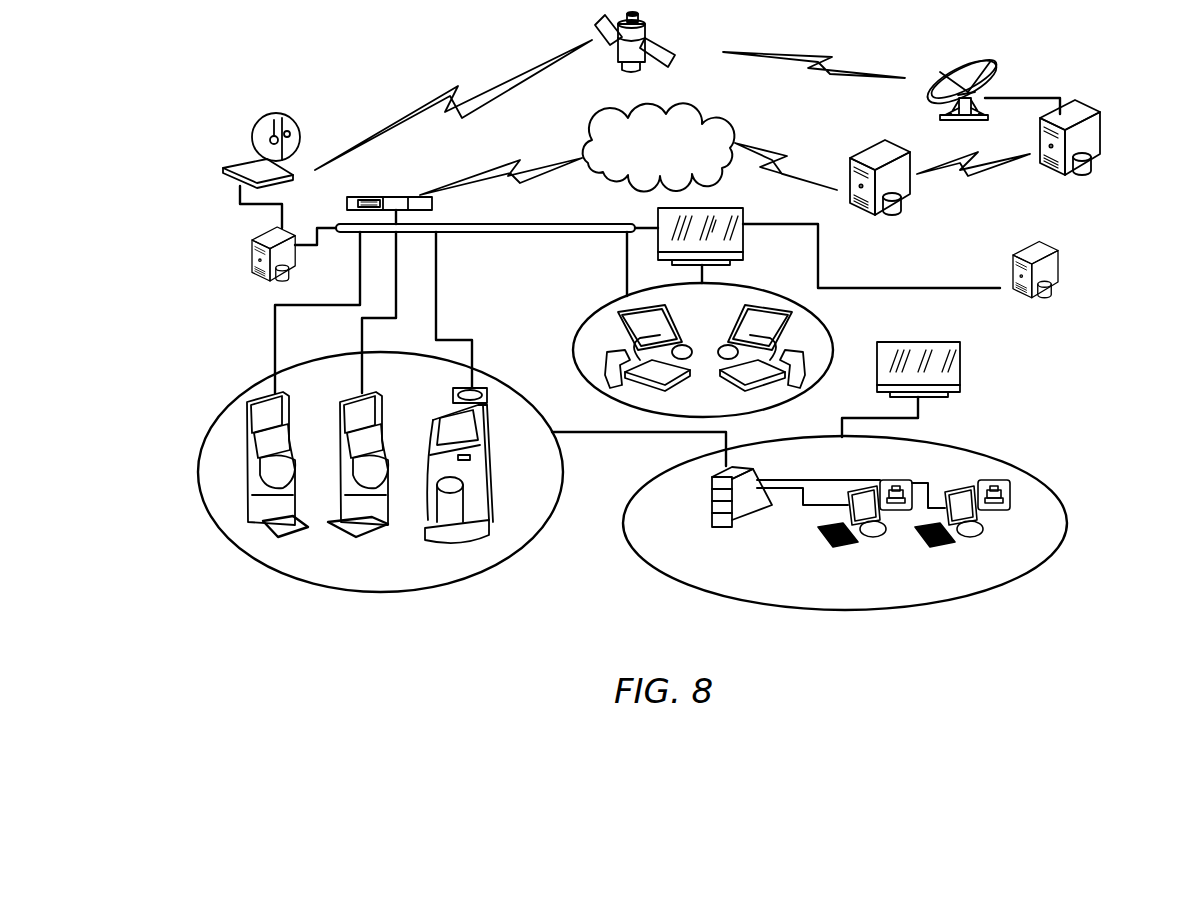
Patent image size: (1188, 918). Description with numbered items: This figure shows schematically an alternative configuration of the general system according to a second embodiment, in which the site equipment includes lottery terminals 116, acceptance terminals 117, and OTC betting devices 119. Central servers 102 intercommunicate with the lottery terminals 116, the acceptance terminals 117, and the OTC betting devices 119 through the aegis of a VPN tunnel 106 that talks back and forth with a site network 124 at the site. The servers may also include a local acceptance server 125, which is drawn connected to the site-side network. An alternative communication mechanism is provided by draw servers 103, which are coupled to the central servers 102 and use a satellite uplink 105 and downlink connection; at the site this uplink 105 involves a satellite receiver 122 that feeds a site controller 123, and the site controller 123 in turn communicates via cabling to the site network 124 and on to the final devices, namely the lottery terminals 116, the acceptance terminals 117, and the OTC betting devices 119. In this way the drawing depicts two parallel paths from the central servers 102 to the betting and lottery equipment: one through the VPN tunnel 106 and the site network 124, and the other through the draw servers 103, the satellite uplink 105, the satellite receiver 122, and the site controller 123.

The central servers 102 is at (898, 182).
The draw servers 103 is at (1092, 133).
The uplink 105 is at (855, 65).
The VPN tunnel 106 is at (718, 108).
The lottery terminals 116 is at (347, 562).
The acceptance terminals 117 is at (930, 578).
The OTC betting devices 119 is at (837, 335).
The satellite receiver 122 is at (274, 123).
The site controller 123 is at (252, 257).
The site network 124 is at (390, 197).
The local acceptance server 125 is at (1052, 270).